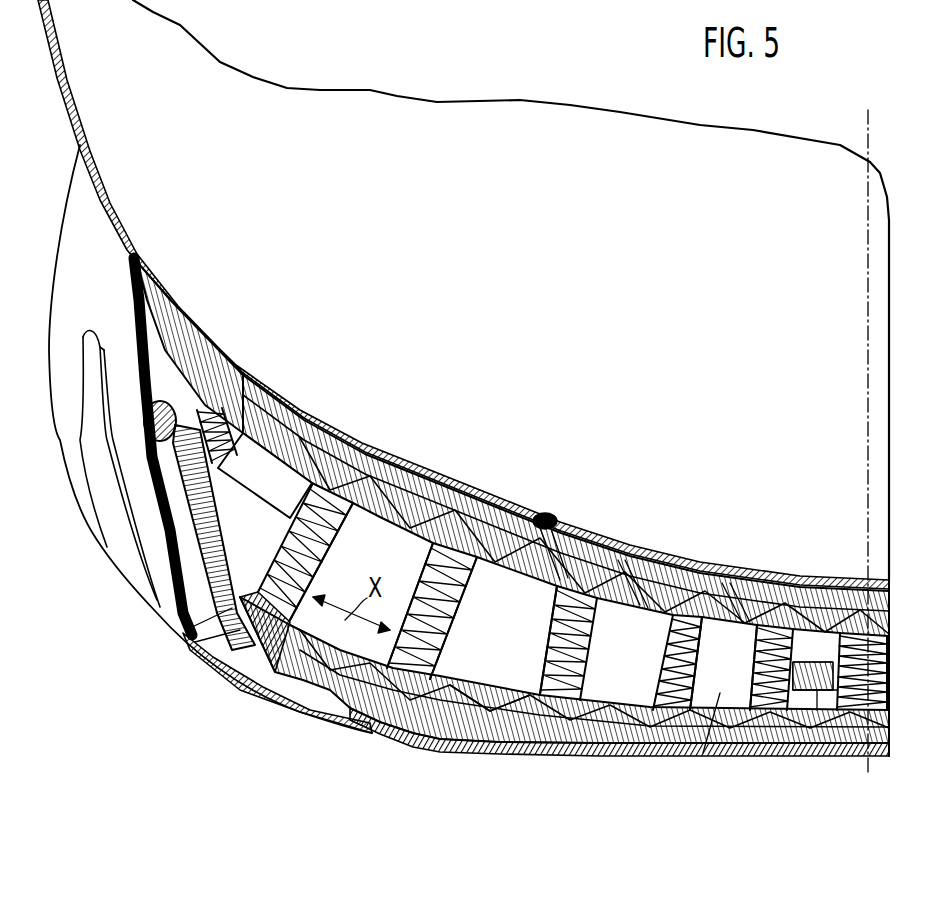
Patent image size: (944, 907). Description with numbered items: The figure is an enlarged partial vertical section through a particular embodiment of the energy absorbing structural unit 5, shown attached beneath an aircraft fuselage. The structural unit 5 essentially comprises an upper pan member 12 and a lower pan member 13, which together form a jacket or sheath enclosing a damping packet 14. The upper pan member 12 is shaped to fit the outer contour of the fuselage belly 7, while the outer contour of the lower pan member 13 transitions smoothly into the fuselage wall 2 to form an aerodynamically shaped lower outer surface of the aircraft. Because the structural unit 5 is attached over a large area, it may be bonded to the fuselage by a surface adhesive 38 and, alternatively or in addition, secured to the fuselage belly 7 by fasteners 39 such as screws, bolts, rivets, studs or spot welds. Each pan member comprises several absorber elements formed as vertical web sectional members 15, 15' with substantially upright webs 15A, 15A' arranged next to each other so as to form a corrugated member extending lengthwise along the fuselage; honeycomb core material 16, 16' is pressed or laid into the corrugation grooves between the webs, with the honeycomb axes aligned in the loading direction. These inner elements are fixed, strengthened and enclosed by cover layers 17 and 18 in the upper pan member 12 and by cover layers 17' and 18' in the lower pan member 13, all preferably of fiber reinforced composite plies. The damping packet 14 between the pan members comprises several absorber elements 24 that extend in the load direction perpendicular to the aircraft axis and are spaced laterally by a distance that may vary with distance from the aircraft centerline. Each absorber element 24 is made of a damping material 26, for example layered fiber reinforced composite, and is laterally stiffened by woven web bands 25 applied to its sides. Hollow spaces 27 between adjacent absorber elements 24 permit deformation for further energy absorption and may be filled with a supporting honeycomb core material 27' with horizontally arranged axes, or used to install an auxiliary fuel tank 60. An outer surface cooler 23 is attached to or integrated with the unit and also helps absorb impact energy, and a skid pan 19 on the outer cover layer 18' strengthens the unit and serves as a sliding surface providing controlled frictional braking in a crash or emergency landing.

The fuselage wall 2 is at (74, 97).
The fuselage belly 7 is at (150, 203).
The upper pan member 12 is at (237, 363).
The honeycomb core material 16 is at (238, 454).
The upright web 15A is at (566, 500).
The vertical web sectional member 15 is at (566, 505).
The upper cover layer 17 is at (594, 536).
The fastener 39 is at (548, 513).
The damping packet 14 is at (633, 560).
The surface adhesive 38 is at (737, 563).
The lower cover layer 18 is at (493, 625).
The woven web band 25 is at (343, 530).
The auxiliary fuel tank 60 is at (253, 477).
The energy absorbing structural unit 5 is at (140, 437).
The outer surface cooler 23 is at (257, 707).
The honeycomb core material 16' is at (331, 689).
The lower cover layer 18' is at (594, 720).
The upright web 15A' is at (594, 732).
The vertical web sectional member 15' is at (564, 705).
The lower pan member 13 is at (649, 750).
The upper cover layer 17' is at (490, 677).
The absorber element 24 is at (584, 650).
The damping material 26 is at (697, 667).
The hollow space 27 is at (723, 753).
The honeycomb core material 27' is at (797, 738).
The skid pan 19 is at (817, 757).